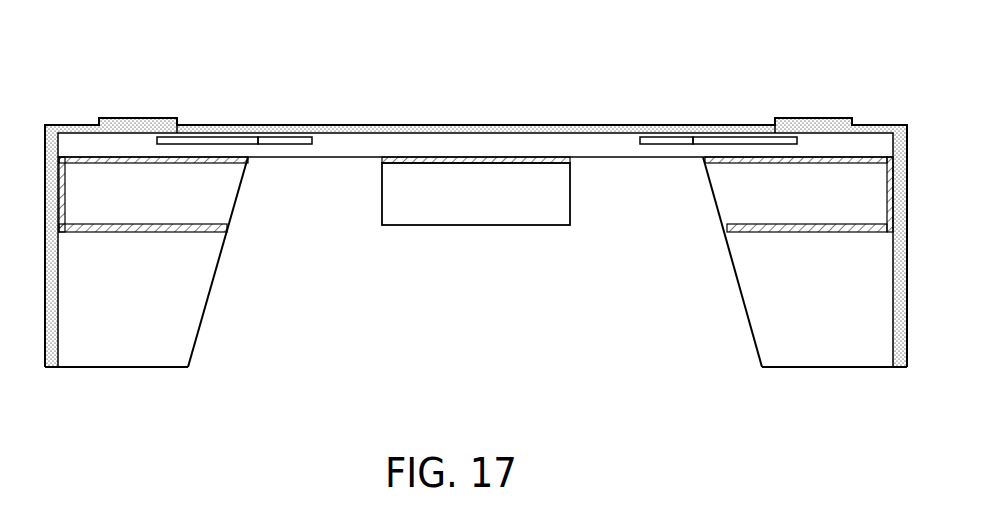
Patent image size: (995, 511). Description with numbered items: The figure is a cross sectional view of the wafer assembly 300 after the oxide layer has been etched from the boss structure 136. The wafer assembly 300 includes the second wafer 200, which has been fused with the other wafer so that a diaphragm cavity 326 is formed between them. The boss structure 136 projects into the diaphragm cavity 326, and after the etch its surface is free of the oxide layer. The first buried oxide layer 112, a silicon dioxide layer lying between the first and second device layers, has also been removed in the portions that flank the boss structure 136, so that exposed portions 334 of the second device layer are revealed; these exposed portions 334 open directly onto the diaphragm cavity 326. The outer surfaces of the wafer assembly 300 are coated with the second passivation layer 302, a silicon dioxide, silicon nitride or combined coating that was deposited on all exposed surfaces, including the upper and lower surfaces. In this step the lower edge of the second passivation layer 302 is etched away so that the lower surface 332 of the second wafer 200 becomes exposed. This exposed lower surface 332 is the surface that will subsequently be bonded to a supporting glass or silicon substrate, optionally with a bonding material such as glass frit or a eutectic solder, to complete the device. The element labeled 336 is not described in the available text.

The wafer assembly 300 is at (757, 50).
The second passivation layer 302 is at (58, 343).
The lower surface of the second wafer 332 is at (125, 367).
The diaphragm cavity 326 is at (428, 305).
The second wafer 200 is at (178, 325).
The first buried oxide layer 112 is at (217, 157).
The exposed portions of the second device layer 334 is at (317, 158).
The adhesive layer 336 is at (524, 157).
The boss structure 136 is at (497, 207).